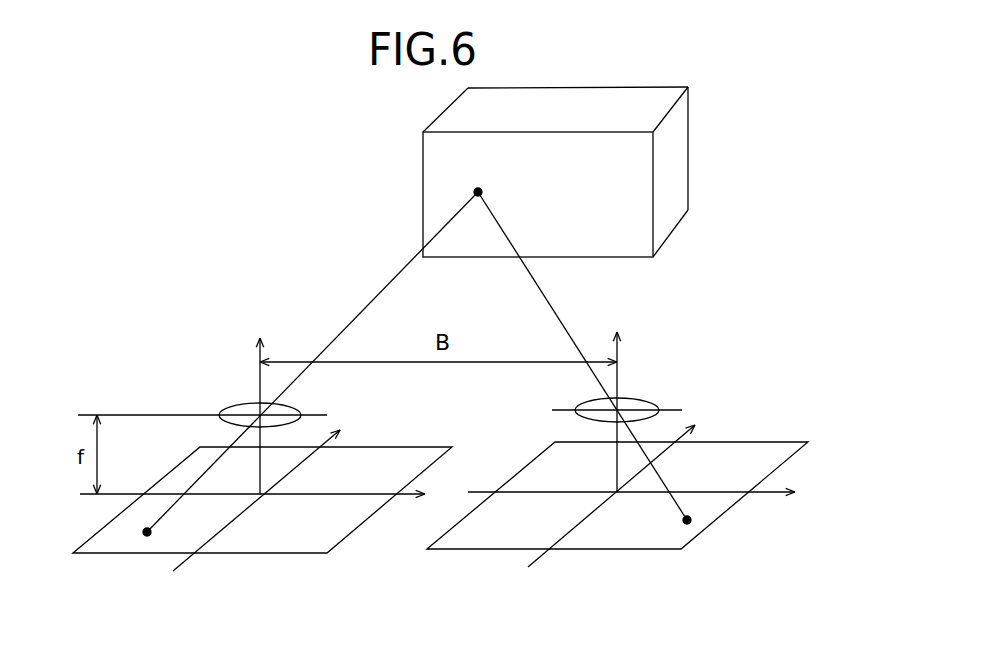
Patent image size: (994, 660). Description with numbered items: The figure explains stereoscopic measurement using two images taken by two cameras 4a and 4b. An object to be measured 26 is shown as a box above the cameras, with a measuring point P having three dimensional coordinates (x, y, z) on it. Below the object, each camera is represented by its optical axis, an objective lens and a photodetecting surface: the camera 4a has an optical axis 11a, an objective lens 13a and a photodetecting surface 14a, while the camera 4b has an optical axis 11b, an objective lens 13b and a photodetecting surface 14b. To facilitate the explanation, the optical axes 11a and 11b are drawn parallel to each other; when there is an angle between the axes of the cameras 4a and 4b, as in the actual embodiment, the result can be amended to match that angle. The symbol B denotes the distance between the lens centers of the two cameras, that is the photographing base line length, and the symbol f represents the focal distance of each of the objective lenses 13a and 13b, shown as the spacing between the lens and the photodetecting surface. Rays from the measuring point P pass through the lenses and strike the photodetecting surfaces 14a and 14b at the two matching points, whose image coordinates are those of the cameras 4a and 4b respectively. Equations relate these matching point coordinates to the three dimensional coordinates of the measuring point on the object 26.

The object to be measured 26 is at (690, 158).
The optical axis of camera 4a 11a is at (255, 385).
The objective lens 13a is at (243, 403).
The photodetecting surface 14a is at (408, 447).
The camera 4a is at (290, 557).
The optical axis of camera 4b 11b is at (622, 372).
The objective lens 13b is at (640, 397).
The photodetecting surface 14b is at (735, 440).
The camera 4b is at (482, 552).